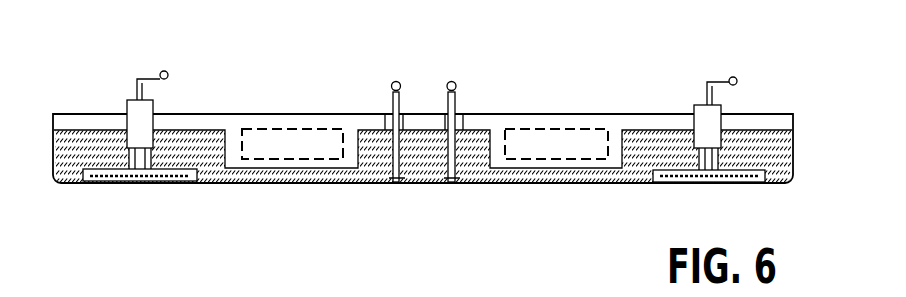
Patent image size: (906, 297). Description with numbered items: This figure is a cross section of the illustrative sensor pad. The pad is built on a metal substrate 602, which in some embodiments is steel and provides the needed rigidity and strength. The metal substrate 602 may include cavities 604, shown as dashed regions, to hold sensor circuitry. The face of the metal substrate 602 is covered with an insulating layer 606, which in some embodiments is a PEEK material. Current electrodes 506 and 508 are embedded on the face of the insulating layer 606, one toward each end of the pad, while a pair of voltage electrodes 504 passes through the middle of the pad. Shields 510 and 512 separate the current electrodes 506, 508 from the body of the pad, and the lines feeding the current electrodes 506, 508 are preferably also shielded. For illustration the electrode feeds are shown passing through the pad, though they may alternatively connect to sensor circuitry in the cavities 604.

The metal substrate 602 is at (502, 113).
The cavities 604 is at (275, 160).
The insulating layer 606 is at (328, 185).
The voltage electrodes 504 is at (424, 128).
The current electrode 506 is at (148, 183).
The current electrode 508 is at (720, 182).
The shield 510 is at (85, 182).
The shield 512 is at (753, 182).